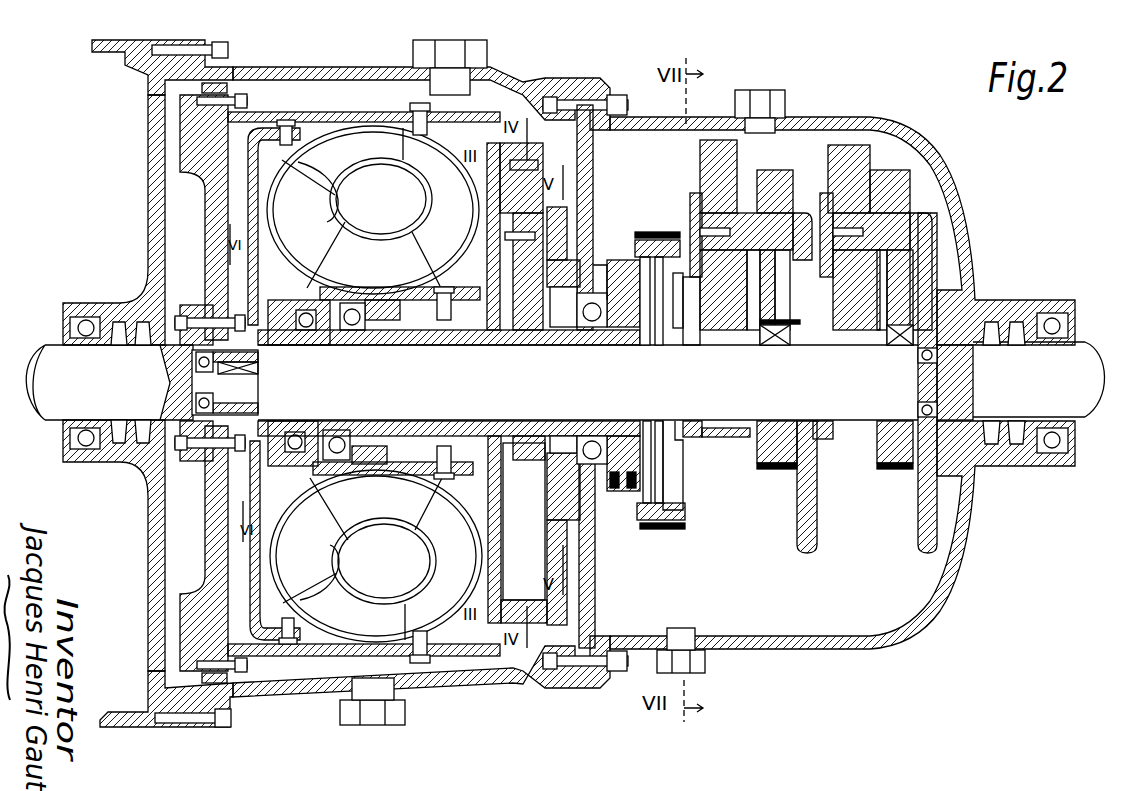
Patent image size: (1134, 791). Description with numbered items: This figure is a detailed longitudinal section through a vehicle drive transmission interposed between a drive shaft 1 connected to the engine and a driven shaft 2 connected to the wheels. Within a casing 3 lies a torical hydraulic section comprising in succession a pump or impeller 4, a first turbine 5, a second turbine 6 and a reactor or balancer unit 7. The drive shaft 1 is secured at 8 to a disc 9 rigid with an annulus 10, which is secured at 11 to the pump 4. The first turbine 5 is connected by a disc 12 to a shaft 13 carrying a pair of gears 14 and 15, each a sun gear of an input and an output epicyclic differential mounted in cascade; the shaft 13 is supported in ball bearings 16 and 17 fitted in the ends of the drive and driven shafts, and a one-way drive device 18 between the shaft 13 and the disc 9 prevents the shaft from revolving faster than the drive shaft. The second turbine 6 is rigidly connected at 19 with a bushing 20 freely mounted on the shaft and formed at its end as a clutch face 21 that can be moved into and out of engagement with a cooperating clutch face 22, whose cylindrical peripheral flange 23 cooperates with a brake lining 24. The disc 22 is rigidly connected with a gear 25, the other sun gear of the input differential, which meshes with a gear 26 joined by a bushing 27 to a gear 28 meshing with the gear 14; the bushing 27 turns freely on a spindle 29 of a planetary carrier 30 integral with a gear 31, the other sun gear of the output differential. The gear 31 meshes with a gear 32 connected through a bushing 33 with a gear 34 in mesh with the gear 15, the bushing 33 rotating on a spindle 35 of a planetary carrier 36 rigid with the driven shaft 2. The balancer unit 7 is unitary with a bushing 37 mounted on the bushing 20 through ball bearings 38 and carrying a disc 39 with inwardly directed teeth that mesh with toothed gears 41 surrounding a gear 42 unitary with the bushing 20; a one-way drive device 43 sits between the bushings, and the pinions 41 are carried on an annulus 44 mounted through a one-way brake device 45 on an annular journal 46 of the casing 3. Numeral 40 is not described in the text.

The drive shaft 1 is at (45, 356).
The driven shaft 2 is at (1072, 367).
The casing 3 is at (155, 218).
The pump or impeller 4 is at (374, 384).
The first turbine 5 is at (383, 370).
The second turbine 6 is at (310, 381).
The reactor or balancer unit 7 is at (374, 384).
The securing point 8 is at (196, 310).
The disc 9 is at (192, 137).
The annulus 10 is at (333, 112).
The securing point 11 is at (430, 118).
The disc 12 is at (255, 172).
The shaft 13 is at (347, 395).
The gear 14 is at (776, 330).
The gear 15 is at (892, 335).
The ball bearing 16 is at (190, 360).
The ball bearing 17 is at (978, 372).
The one-way drive device 18 is at (258, 355).
The connection point 19 is at (290, 287).
The bushing 20 is at (422, 338).
The clutch face 21 is at (640, 318).
The clutch face 22 is at (665, 330).
The cylindrical peripheral flange 23 is at (640, 247).
The brake lining 24 is at (662, 232).
The gear 25 is at (695, 338).
The gear 26 is at (748, 359).
The bushing 27 is at (745, 190).
The gear 28 is at (785, 195).
The spindle 29 is at (756, 236).
The planetary carrier 30 is at (802, 335).
The gear 31 is at (838, 340).
The gear 32 is at (873, 359).
The bushing 33 is at (870, 200).
The gear 34 is at (890, 191).
The spindle 35 is at (882, 271).
The planetary carrier 36 is at (935, 300).
The bushing 37 is at (376, 382).
The ball bearings 38 is at (345, 325).
The disc 39 is at (498, 140).
The pin 40 is at (560, 125).
The toothed gear 41 is at (548, 128).
The gear 42 is at (545, 330).
The one-way drive device 43 is at (515, 318).
The annulus 44 is at (572, 215).
The one-way brake device 45 is at (598, 275).
The annular journal 46 is at (563, 370).